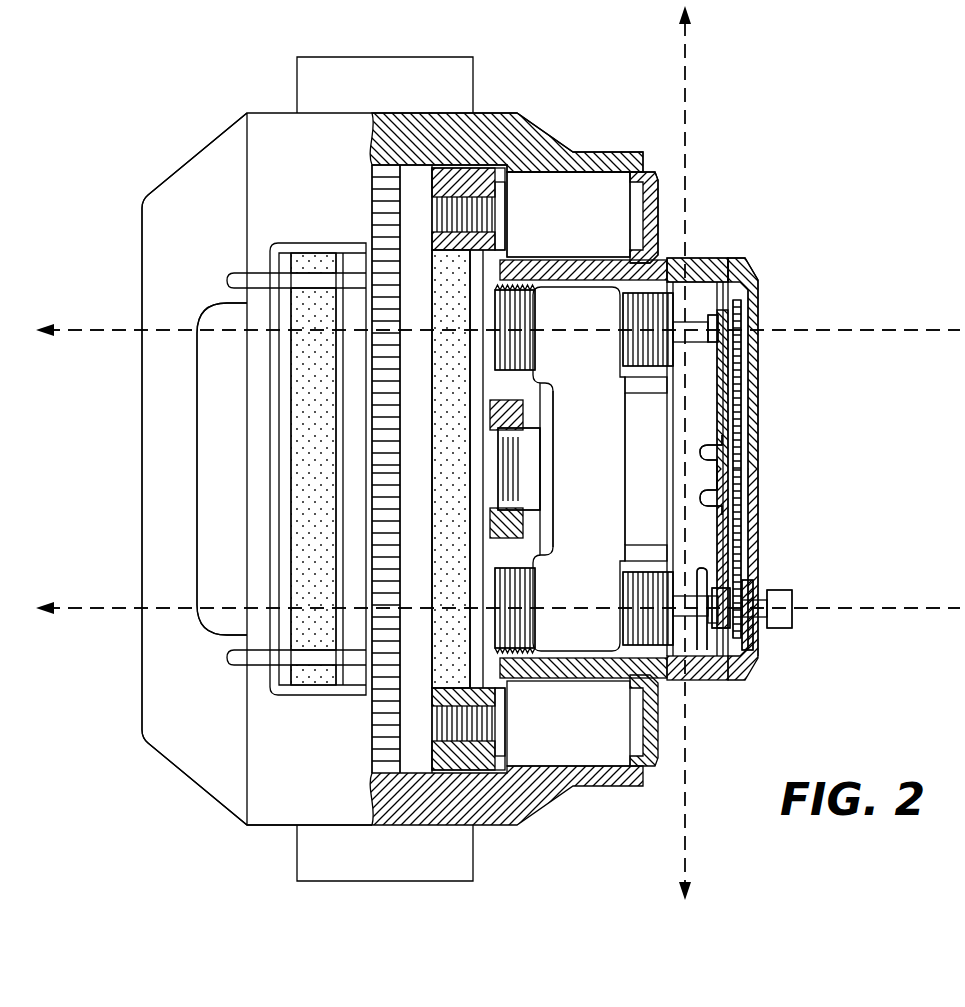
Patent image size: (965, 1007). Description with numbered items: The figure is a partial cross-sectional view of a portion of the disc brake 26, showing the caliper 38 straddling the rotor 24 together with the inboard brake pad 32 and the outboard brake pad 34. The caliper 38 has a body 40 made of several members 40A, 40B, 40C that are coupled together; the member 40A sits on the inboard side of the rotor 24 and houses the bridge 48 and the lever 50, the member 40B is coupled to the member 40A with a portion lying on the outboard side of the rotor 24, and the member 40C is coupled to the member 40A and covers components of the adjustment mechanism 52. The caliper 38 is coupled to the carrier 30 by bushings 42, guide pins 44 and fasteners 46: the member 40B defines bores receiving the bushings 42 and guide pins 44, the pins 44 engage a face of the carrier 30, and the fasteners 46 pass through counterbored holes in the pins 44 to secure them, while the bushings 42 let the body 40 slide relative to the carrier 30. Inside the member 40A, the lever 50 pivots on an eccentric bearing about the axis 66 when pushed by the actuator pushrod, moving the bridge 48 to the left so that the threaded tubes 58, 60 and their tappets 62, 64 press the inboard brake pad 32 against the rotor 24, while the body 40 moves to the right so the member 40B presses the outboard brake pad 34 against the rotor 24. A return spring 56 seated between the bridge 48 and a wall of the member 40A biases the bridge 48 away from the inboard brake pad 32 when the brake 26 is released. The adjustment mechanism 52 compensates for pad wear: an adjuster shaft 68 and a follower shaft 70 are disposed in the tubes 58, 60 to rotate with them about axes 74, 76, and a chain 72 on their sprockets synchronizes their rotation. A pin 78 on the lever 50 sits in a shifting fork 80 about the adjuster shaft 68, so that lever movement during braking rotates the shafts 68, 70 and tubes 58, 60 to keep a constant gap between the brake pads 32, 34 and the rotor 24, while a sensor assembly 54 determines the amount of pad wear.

The rotor 24 is at (412, 240).
The brake 26 is at (134, 779).
The carrier 30 is at (451, 768).
The inboard brake pad 32 is at (456, 638).
The outboard brake pad 34 is at (312, 447).
The caliper 38 is at (501, 106).
The body 40 is at (181, 221).
The member 40A is at (703, 258).
The member 40B is at (218, 157).
The member 40C is at (741, 273).
The bushing 42 is at (593, 185).
The guide pin 44 is at (500, 208).
The fastener 46 is at (648, 195).
The bridge 48 is at (650, 413).
The lever 50 is at (712, 467).
The adjustment mechanism 52 is at (765, 311).
The sensor assembly 54 is at (810, 631).
The return spring 56 is at (516, 478).
The threaded tube 58 is at (656, 626).
The threaded tube 60 is at (655, 318).
The tappet 62 is at (497, 601).
The tappet 64 is at (495, 338).
The axis 66 is at (688, 860).
The adjuster shaft 68 is at (692, 612).
The follower shaft 70 is at (700, 332).
The chain 72 is at (734, 486).
The axis 74 is at (904, 614).
The axis 76 is at (904, 336).
The pin 78 is at (708, 598).
The shifting fork 80 is at (714, 630).